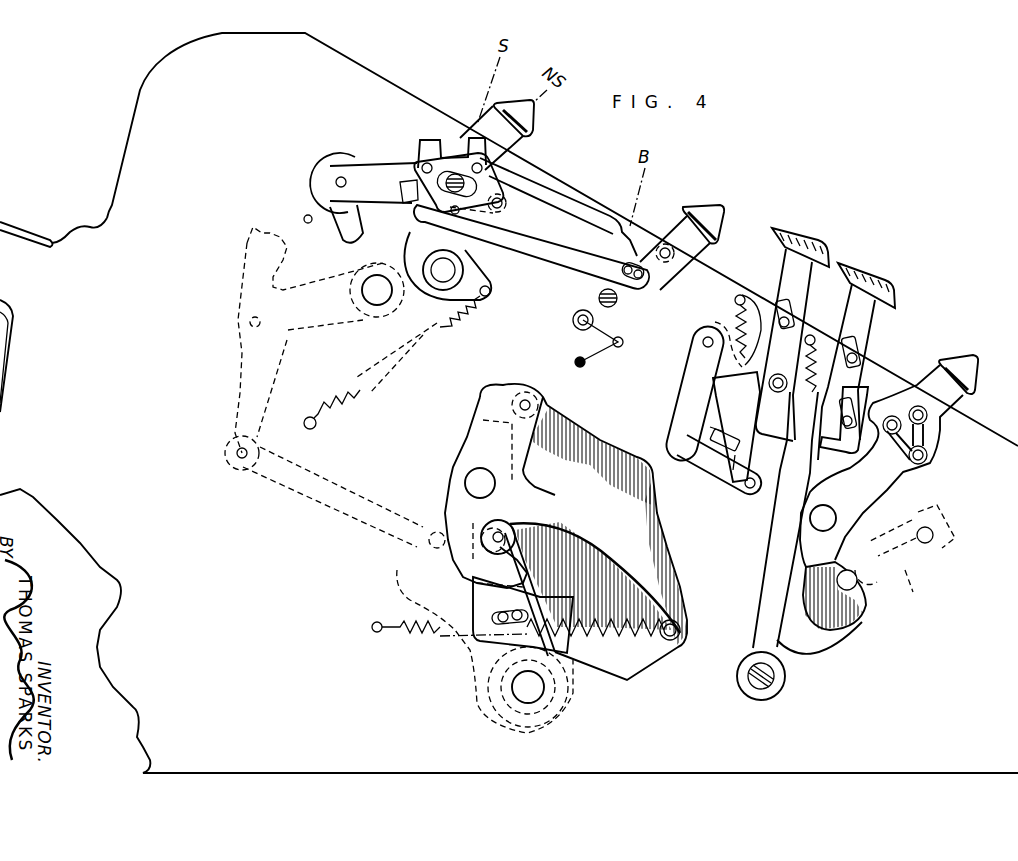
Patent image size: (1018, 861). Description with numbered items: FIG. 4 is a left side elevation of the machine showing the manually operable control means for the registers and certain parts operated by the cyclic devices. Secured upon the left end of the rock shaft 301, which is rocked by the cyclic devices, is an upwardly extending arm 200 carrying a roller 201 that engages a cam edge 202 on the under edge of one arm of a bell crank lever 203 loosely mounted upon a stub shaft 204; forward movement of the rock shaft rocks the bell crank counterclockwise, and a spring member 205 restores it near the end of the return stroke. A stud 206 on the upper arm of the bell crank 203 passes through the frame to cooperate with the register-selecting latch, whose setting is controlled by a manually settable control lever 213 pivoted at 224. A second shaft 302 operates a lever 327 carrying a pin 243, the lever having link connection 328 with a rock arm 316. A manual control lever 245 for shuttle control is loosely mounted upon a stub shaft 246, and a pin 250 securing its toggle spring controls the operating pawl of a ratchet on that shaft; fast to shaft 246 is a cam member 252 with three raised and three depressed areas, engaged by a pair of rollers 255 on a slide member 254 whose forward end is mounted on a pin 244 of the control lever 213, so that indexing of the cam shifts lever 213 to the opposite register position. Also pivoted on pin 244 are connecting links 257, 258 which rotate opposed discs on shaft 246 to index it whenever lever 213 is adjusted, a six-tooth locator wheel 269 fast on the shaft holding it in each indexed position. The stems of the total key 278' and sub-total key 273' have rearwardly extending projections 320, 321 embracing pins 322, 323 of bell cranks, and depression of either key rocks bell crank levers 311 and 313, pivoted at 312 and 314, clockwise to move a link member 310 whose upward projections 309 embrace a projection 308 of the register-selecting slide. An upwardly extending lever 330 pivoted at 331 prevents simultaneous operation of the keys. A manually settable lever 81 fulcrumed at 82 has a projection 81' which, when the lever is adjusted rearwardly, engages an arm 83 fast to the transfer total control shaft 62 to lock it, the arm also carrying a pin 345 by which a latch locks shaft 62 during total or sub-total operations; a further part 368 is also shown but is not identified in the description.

The upwardly extending arm 200 is at (582, 538).
The roller 201 is at (525, 535).
The cam edge 202 is at (508, 527).
The bell crank lever 203 is at (455, 490).
The stub shaft 204 is at (465, 480).
The spring member 205 is at (423, 636).
The stud 206 is at (540, 403).
The manually settable control lever 213 is at (726, 192).
The pivot 224 is at (617, 302).
The pin 243 is at (250, 320).
The pin 244 is at (642, 284).
The manual control lever 245 is at (520, 140).
The stub shaft 246 is at (438, 158).
The pin 250 is at (336, 182).
The cam member 252 is at (455, 170).
The slide member 254 is at (507, 222).
The rollers 255 is at (415, 162).
The connecting link 257 is at (540, 245).
The connecting link 258 is at (562, 213).
The six-tooth locator wheel 269 is at (402, 204).
The sub-total key 273' is at (803, 316).
The total key 278' is at (866, 343).
The rock shaft 301 is at (545, 692).
The shaft 302 is at (377, 283).
The laterally extending projection 308 is at (712, 470).
The spaced projections 309 is at (722, 433).
The link member 310 is at (733, 490).
The bell crank lever 311 is at (753, 492).
The pivot 312 is at (770, 384).
The second bell crank lever 313 is at (688, 385).
The pivot 314 is at (703, 343).
The rock arm 316 is at (472, 690).
The rearwardly extending projections 320 is at (858, 386).
The rearwardly extending projections 321 is at (720, 323).
The pin 322 is at (812, 335).
The pin 323 is at (738, 297).
The lever 327 is at (240, 393).
The link connection 328 is at (291, 483).
The upwardly extending lever 330 is at (766, 580).
The pivot 331 is at (775, 690).
The pin 345 is at (880, 585).
The spring 368 is at (408, 313).
The transfer total control shaft 62 is at (940, 545).
The manually settable lever 81 is at (902, 461).
The projection 81' is at (842, 608).
The fulcrum 82 is at (836, 520).
The arm 83 is at (912, 583).